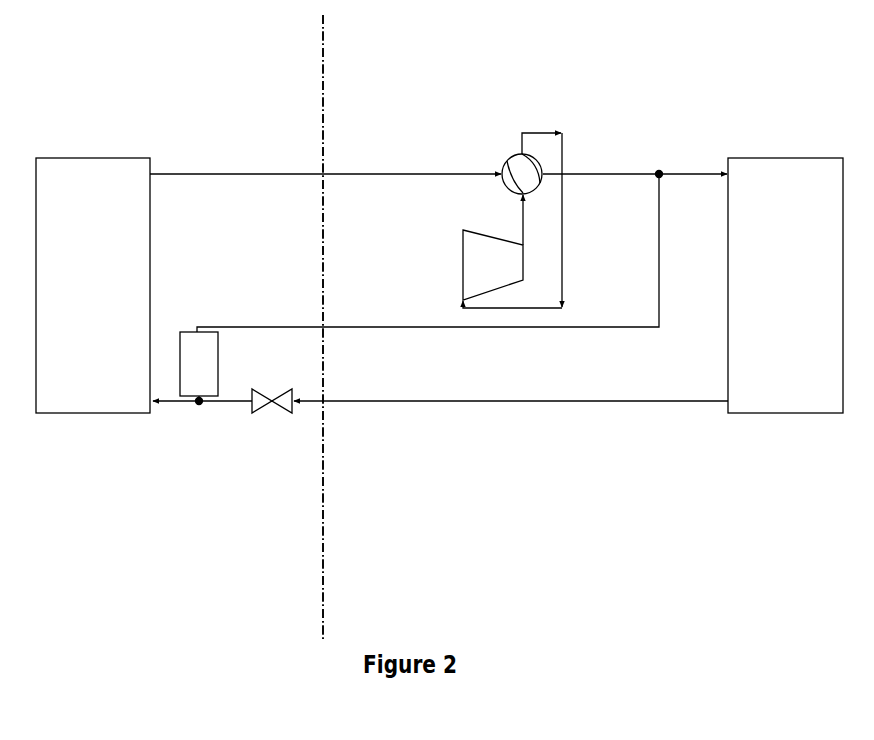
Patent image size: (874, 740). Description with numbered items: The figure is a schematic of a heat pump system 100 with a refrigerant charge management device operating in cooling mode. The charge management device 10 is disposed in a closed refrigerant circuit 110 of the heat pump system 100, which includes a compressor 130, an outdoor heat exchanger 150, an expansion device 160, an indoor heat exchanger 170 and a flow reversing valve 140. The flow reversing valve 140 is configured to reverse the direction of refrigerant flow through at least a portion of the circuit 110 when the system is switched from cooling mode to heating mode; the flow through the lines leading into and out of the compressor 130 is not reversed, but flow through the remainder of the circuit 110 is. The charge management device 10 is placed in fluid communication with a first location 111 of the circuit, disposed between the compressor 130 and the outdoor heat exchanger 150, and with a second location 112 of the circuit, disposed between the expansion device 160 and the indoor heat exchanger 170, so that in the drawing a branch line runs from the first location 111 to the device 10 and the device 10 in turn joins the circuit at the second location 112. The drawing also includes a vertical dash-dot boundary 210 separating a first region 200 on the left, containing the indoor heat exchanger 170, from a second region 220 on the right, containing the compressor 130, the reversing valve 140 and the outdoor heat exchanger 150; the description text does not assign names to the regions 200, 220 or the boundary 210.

The heat pump system 100 is at (813, 71).
The first region 200 is at (302, 328).
The second region 220 is at (345, 328).
The boundary / partition line 210 is at (322, 138).
The indoor heat exchanger 170 is at (93, 285).
The outdoor heat exchanger 150 is at (785, 285).
The first location 111 is at (659, 171).
The flow reversing valve 140 is at (513, 161).
The compressor 130 is at (512, 251).
The refrigerant circuit 110 is at (594, 402).
The expansion device 160 is at (252, 412).
The charge management device 10 is at (192, 330).
The second location 112 is at (199, 404).